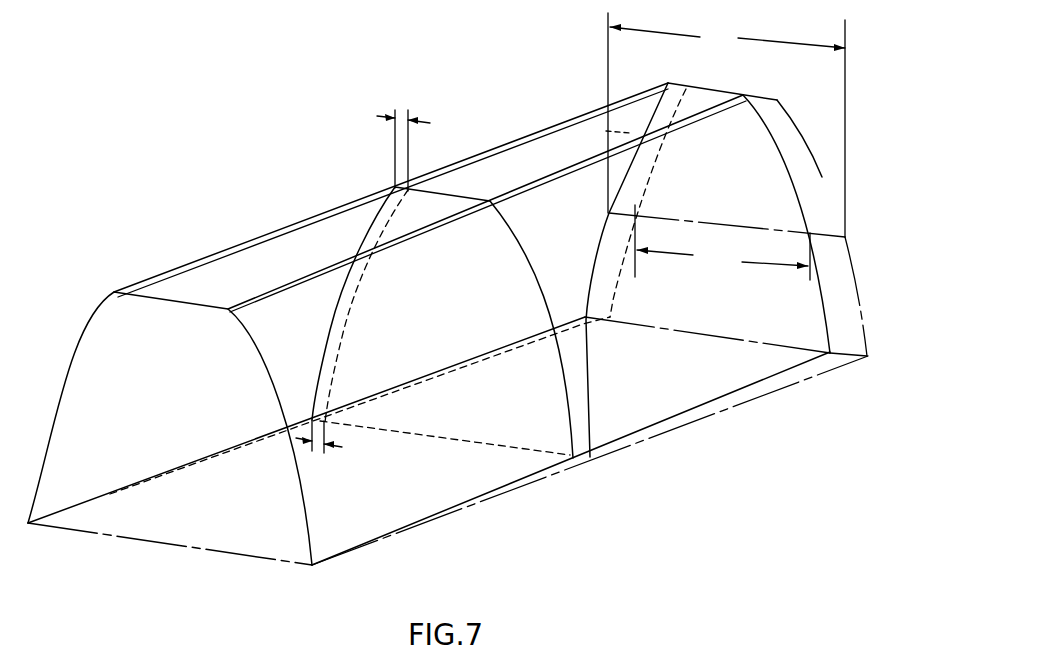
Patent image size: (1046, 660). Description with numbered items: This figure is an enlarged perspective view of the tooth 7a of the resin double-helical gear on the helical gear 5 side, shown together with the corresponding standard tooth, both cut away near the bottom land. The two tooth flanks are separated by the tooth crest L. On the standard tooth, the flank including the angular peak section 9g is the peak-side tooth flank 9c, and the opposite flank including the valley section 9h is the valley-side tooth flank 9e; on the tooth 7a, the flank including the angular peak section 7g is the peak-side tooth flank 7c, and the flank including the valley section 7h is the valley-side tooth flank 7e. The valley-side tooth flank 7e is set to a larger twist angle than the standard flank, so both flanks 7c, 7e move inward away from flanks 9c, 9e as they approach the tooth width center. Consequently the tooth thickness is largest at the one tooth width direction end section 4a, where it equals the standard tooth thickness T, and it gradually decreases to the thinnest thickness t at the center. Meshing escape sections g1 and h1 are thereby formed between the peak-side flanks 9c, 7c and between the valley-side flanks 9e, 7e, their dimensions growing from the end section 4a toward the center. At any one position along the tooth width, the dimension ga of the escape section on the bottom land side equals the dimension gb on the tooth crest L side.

The one tooth width direction end section 4a is at (80, 398).
The tooth 7a is at (248, 258).
The tooth crest L is at (300, 237).
The helical gear 5 is at (462, 182).
The peak-side tooth flank 9c is at (363, 232).
The peak-side tooth flank 7c is at (389, 184).
The dimension on the tooth crest side gb is at (403, 141).
The dimension on the bottom land side ga is at (319, 448).
The valley-side tooth flank 9e is at (590, 428).
The valley-side tooth flank 7e is at (570, 397).
The meshing escape section g1 is at (660, 110).
The angular peak section 7g is at (625, 253).
The angular peak section 9g is at (606, 131).
The meshing escape section h1 is at (786, 123).
The valley section 9h is at (822, 177).
The valley section 7h is at (808, 217).
The tooth thickness T is at (726, 125).
The thinnest thickness t is at (722, 242).